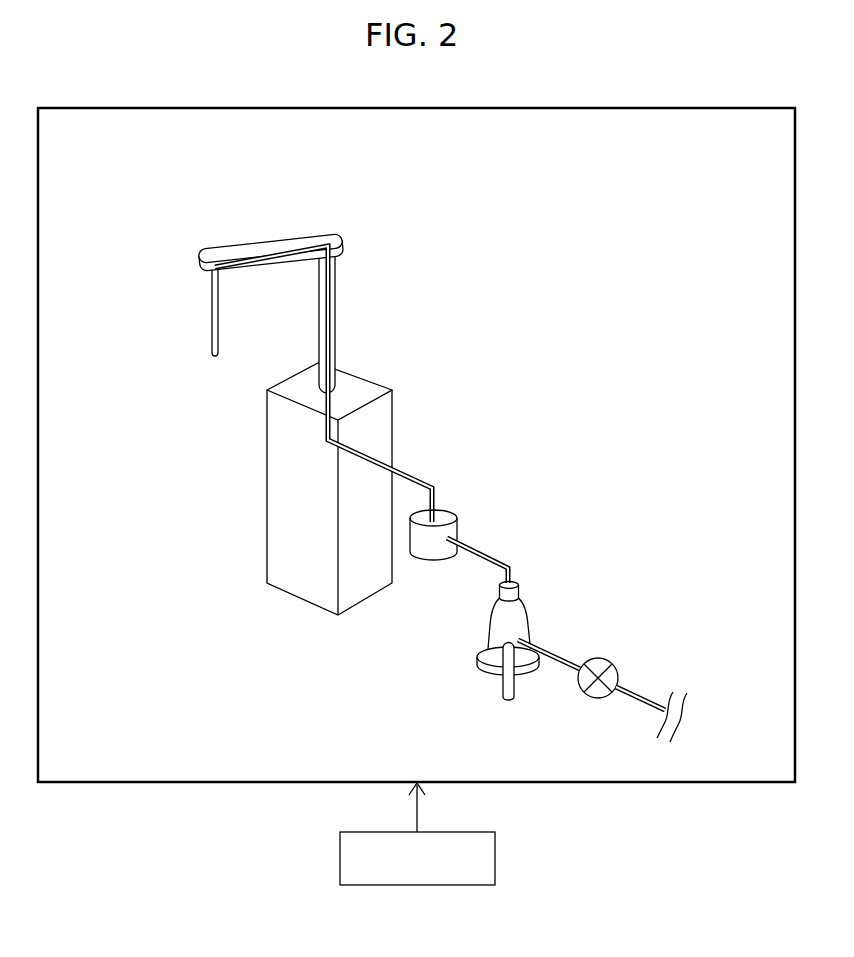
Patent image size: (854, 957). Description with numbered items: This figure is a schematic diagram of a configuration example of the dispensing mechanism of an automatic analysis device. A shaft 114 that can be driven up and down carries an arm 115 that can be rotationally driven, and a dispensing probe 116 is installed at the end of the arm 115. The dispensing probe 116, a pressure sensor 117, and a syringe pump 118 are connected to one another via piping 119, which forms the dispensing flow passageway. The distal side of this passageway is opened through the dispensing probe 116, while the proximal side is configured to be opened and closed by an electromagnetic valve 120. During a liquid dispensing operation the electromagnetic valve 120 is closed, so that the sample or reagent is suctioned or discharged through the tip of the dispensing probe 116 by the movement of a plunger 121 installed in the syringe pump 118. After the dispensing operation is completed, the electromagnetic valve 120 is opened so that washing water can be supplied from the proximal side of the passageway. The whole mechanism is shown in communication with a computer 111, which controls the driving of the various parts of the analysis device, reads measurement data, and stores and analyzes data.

The computer 111 is at (496, 858).
The shaft 114 is at (337, 315).
The arm 115 is at (303, 231).
The dispensing probe 116 is at (212, 317).
The pressure sensor 117 is at (457, 517).
The syringe pump 118 is at (528, 615).
The piping 119 is at (337, 268).
The electromagnetic valve 120 is at (610, 654).
The plunger 121 is at (517, 697).